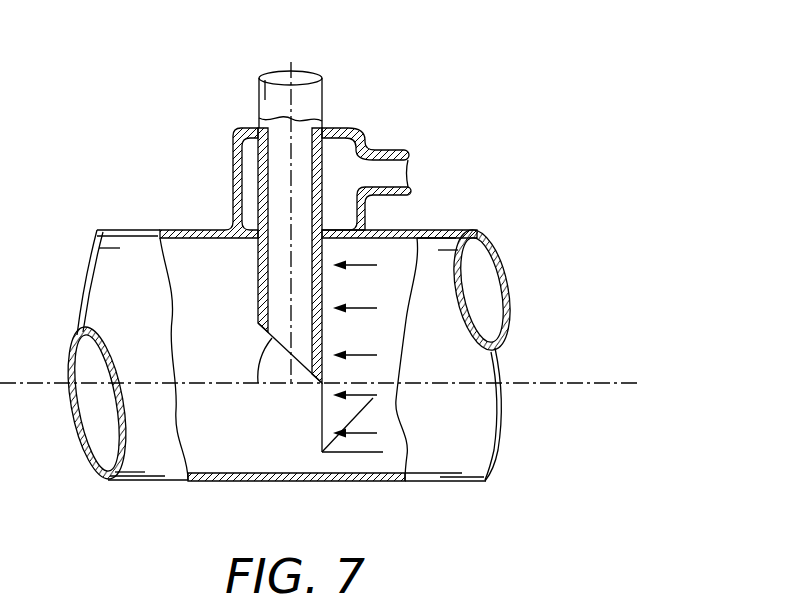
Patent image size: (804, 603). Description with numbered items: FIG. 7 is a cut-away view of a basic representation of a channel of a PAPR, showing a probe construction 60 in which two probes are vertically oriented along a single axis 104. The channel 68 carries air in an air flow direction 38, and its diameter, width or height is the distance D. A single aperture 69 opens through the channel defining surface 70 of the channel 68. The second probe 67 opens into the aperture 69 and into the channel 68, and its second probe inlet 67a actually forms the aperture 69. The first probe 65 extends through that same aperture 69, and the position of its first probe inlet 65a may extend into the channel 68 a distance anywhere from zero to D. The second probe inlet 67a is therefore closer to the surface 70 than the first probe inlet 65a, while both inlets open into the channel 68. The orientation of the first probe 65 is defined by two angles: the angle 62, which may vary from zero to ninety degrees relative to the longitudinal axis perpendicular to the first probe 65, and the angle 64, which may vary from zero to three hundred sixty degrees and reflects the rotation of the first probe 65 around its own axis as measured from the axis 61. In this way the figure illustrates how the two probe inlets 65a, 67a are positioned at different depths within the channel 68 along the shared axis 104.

The single axis 104 is at (307, 50).
The second probe 67 is at (242, 131).
The probe construction 60 is at (395, 128).
The first probe 65 is at (259, 178).
The channel defining surface 70 is at (392, 230).
The aperture 69 is at (242, 243).
The second probe inlet 67a is at (337, 228).
The channel 68 is at (244, 282).
The air flow direction 38 is at (358, 309).
The first probe inlet 65a is at (248, 334).
The angle 62 is at (258, 381).
The angle 64 is at (350, 424).
The axis 61 is at (363, 407).